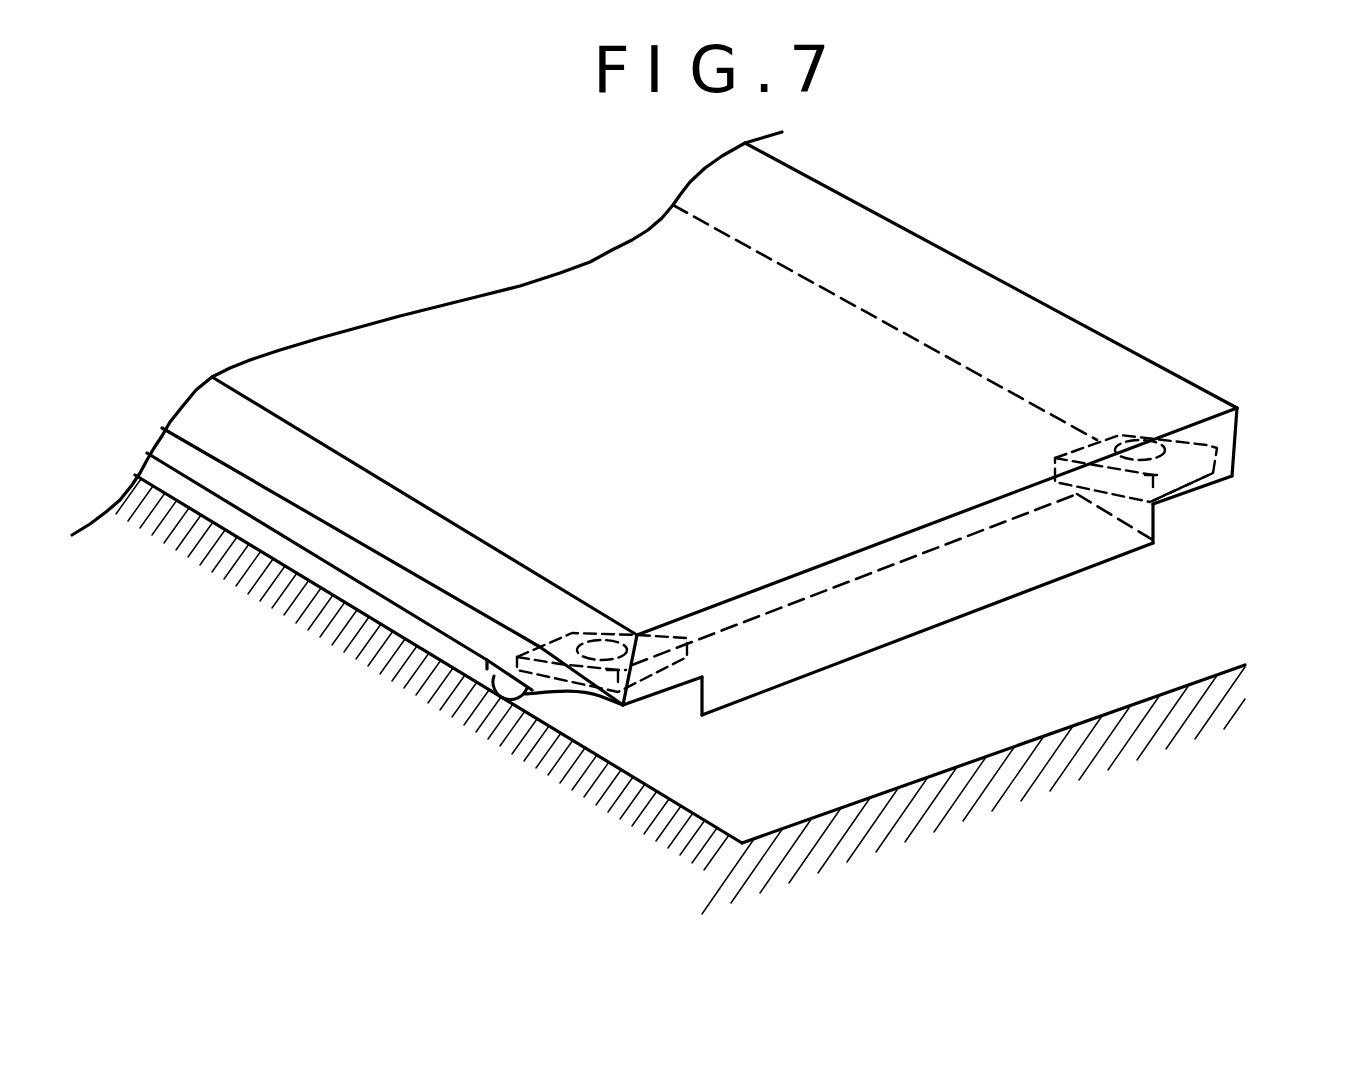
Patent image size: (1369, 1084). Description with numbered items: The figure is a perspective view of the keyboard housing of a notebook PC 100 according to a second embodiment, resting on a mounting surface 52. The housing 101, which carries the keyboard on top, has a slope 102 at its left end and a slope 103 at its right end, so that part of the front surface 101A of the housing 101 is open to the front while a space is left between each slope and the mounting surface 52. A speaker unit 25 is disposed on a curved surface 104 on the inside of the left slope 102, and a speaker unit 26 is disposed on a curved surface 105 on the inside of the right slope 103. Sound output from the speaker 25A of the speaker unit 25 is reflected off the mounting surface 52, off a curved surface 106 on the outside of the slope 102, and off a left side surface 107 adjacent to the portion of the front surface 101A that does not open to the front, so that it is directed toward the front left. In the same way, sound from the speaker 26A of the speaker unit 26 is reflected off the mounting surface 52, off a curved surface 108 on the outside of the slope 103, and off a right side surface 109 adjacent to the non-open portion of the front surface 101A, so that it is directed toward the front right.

The notebook PC 100 is at (952, 190).
The housing 101 is at (297, 528).
The front surface 101A is at (842, 632).
The slope 102 is at (555, 693).
The slope 103 is at (1182, 500).
The curved surface 104 is at (687, 695).
The curved surface 105 is at (1213, 493).
The curved surface 106 is at (635, 690).
The left side surface 107 is at (693, 687).
The curved surface 108 is at (1236, 488).
The right side surface 109 is at (1130, 513).
The speaker unit 25 is at (672, 655).
The speaker 25A is at (602, 648).
The speaker unit 26 is at (1225, 455).
The speaker 26A is at (1143, 447).
The mounting surface 52 is at (808, 777).